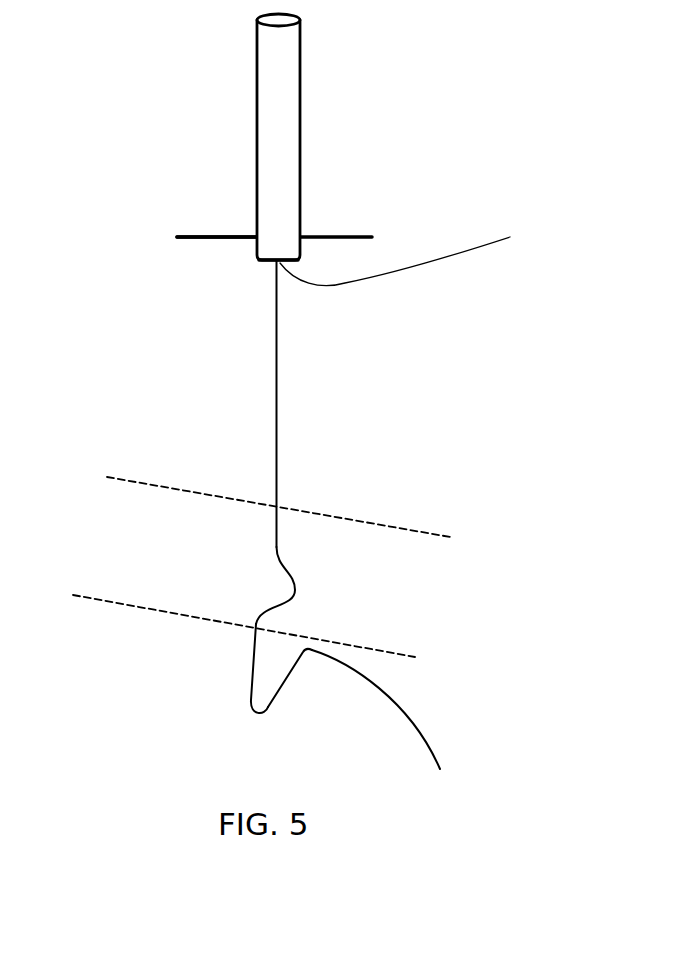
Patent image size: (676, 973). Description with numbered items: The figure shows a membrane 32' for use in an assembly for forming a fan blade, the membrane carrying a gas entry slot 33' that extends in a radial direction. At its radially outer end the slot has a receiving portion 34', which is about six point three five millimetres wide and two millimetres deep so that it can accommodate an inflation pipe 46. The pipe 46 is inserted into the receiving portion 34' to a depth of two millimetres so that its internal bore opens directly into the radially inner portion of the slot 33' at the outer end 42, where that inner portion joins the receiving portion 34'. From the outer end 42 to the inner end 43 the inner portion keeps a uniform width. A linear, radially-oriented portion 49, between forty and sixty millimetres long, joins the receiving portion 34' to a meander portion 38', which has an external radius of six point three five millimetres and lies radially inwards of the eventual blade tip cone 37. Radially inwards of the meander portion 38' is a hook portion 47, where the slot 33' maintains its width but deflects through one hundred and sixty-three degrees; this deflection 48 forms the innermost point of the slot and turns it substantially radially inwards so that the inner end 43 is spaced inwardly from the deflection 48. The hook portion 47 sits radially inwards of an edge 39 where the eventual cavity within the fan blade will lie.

The gas entry slot 33' is at (319, 504).
The receiving portion 34' is at (149, 172).
The membrane 32' is at (364, 161).
The inflation pipe 46 is at (270, 140).
The outer end 42 is at (413, 253).
The linear, radially-oriented portion 49 is at (277, 405).
The blade tip cone 37 is at (408, 526).
The meander portion 38' is at (417, 585).
The edge 39 is at (415, 657).
The deflection 48 is at (258, 713).
The hook portion 47 is at (302, 690).
The inner end 43 is at (390, 722).